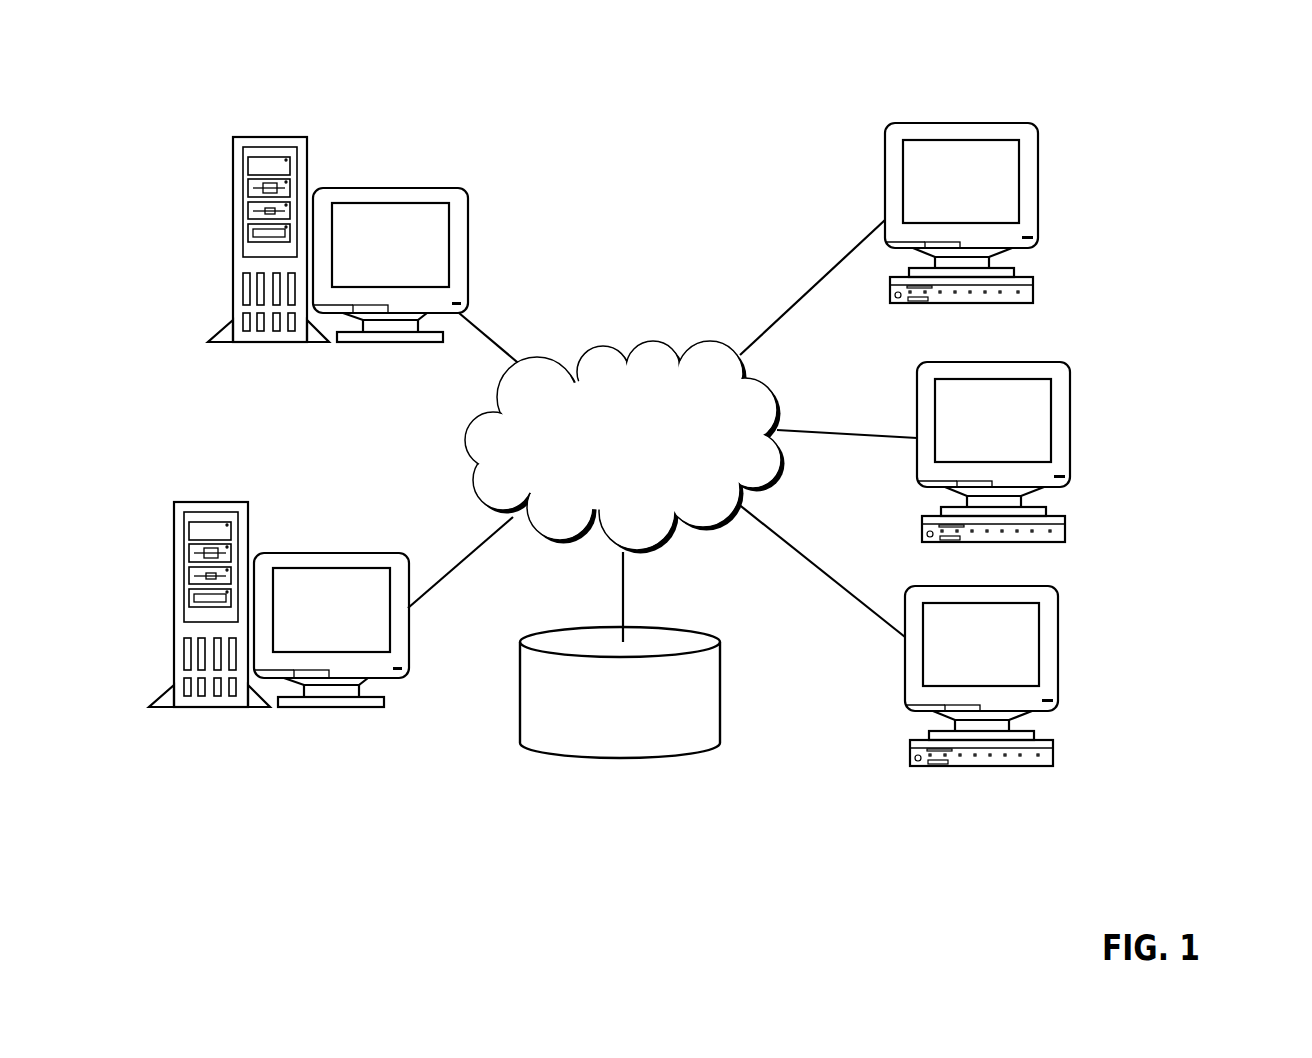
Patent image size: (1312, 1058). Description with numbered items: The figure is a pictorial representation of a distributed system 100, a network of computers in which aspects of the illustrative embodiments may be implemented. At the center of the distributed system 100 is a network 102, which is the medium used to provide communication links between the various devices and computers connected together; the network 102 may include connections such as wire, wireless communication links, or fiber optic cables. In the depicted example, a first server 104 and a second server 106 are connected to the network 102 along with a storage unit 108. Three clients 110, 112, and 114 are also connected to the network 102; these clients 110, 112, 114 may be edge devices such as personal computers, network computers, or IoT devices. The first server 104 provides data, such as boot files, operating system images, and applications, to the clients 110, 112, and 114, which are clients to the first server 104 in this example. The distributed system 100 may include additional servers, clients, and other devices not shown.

The distributed system 100 is at (1226, 115).
The network 102 is at (596, 472).
The first server 104 is at (233, 215).
The second server 106 is at (175, 587).
The storage unit 108 is at (699, 716).
The client 110 is at (1038, 205).
The client 112 is at (1073, 390).
The client 114 is at (1058, 627).